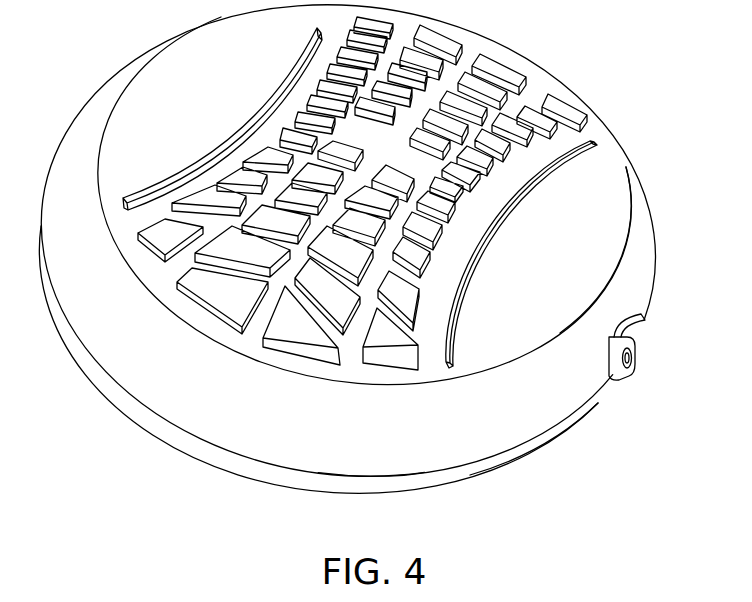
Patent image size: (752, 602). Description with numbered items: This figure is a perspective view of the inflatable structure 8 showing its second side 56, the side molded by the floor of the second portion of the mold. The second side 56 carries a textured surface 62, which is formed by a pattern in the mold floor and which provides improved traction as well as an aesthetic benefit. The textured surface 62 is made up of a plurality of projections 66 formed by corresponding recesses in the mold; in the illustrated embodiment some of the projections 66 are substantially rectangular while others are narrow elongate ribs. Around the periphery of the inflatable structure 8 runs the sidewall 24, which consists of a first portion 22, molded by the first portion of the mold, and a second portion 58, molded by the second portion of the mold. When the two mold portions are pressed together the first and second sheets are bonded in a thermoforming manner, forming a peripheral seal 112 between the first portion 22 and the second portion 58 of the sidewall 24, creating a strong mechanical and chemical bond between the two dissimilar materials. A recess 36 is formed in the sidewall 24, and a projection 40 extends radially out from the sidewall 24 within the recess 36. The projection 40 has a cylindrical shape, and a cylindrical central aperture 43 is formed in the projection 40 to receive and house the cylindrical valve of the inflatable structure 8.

The inflatable structure 8 is at (645, 47).
The first portion of sidewall 22 is at (491, 468).
The sidewall 24 is at (257, 418).
The recess 36 is at (641, 327).
The projection 40 is at (616, 343).
The central aperture 43 is at (633, 362).
The second side 56 is at (557, 256).
The second portion of sidewall 58 is at (553, 420).
The textured surface 62 is at (489, 53).
The projections 66 is at (362, 147).
The peripheral seal 112 is at (381, 473).